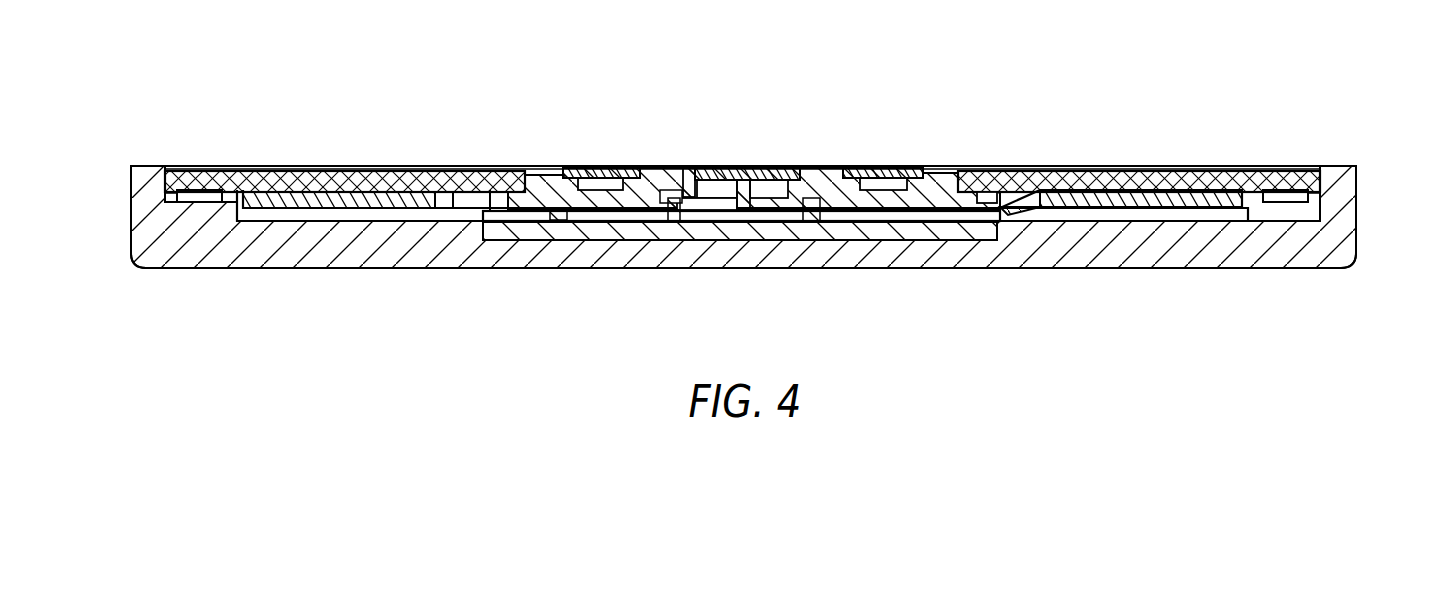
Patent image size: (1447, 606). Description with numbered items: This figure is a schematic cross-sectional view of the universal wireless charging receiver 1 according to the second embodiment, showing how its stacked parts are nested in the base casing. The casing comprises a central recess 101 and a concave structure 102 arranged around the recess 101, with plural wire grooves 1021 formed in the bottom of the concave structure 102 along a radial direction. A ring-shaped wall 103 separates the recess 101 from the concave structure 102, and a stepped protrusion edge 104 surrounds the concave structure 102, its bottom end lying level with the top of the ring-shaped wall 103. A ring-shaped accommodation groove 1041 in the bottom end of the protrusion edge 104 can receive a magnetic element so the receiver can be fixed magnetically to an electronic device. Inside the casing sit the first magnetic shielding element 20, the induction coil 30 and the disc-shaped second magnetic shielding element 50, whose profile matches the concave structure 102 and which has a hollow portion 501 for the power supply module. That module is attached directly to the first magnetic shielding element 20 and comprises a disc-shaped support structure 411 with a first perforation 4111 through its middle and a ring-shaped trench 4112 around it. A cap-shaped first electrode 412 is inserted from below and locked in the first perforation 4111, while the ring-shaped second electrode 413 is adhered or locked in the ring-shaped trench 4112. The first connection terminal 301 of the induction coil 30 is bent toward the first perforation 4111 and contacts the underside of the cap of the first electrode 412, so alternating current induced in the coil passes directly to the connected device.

The universal wireless charging receiver 1 is at (58, 55).
The recess 101 is at (718, 231).
The concave structure 102 is at (1077, 223).
The wire grooves 1021 is at (1153, 212).
The ring-shaped wall 103 is at (472, 203).
The protrusion edge 104 is at (170, 193).
The ring-shaped accommodation groove 1041 is at (203, 198).
The first magnetic shielding element 20 is at (580, 232).
The induction coil 30 is at (359, 198).
The first connection terminal 301 is at (933, 213).
The disc-shaped support structure 411 is at (932, 192).
The first perforation 4111 is at (686, 167).
The ring-shaped trench 4112 is at (868, 166).
The first electrode 412 is at (760, 166).
The ring-shaped second electrode 413 is at (596, 166).
The second magnetic shielding element 50 is at (1192, 178).
The hollow portion 501 is at (960, 175).